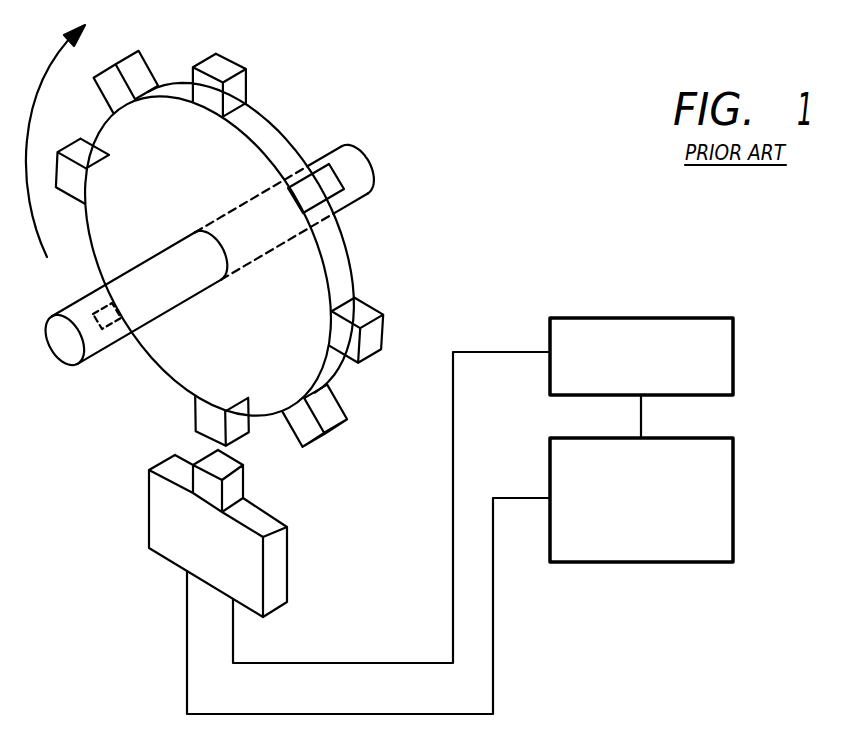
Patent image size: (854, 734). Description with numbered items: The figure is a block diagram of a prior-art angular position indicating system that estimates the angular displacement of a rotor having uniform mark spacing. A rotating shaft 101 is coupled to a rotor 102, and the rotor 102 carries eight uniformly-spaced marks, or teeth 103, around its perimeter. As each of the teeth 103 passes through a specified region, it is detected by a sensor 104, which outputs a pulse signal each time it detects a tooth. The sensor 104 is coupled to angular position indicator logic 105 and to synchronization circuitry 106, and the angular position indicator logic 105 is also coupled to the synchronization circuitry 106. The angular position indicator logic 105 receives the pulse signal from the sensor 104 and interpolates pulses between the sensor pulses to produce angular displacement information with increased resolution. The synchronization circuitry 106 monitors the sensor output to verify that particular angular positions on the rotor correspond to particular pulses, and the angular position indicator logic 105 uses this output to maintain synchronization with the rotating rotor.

The rotating shaft 101 is at (86, 358).
The rotor 102 is at (350, 267).
The marks (teeth) 103 is at (368, 303).
The sensor 104 is at (289, 568).
The angular position indicator logic 105 is at (733, 468).
The synchronization circuitry 106 is at (700, 318).